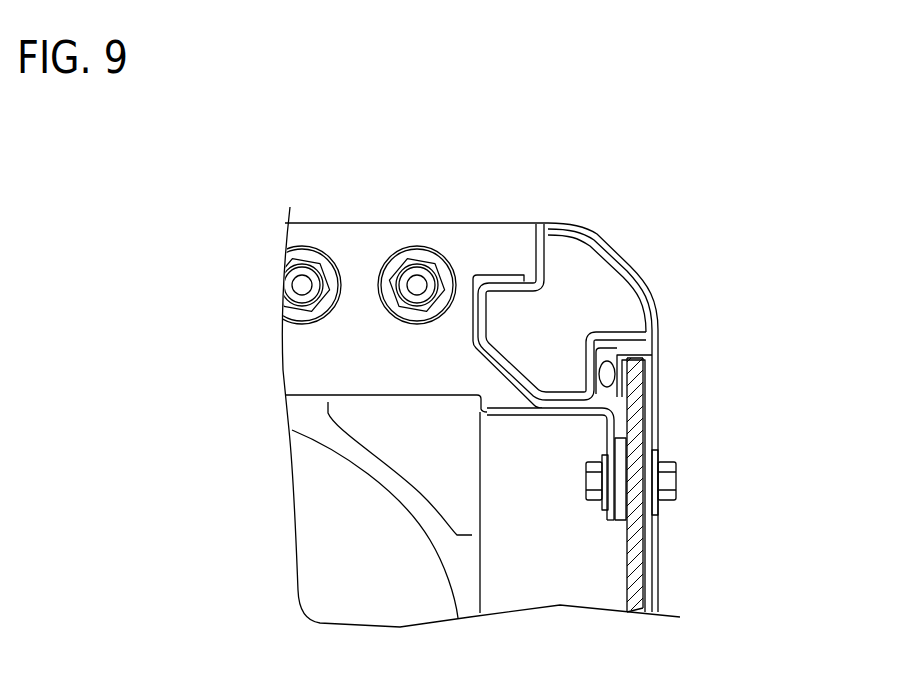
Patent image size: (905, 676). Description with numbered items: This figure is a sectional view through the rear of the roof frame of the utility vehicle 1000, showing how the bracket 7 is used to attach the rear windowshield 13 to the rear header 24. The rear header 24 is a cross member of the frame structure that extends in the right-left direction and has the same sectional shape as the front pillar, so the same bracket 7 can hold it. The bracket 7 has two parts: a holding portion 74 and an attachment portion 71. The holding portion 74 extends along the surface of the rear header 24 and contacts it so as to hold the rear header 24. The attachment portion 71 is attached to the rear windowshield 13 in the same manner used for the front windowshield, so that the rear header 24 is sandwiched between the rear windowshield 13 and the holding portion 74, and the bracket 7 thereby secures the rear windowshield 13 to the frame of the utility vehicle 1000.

The utility vehicle 1000 is at (337, 181).
The bracket 7 is at (515, 278).
The holding portion 74 is at (465, 308).
The rear header 24 is at (633, 250).
The attachment portion 71 is at (620, 432).
The rear windowshield 13 is at (647, 578).